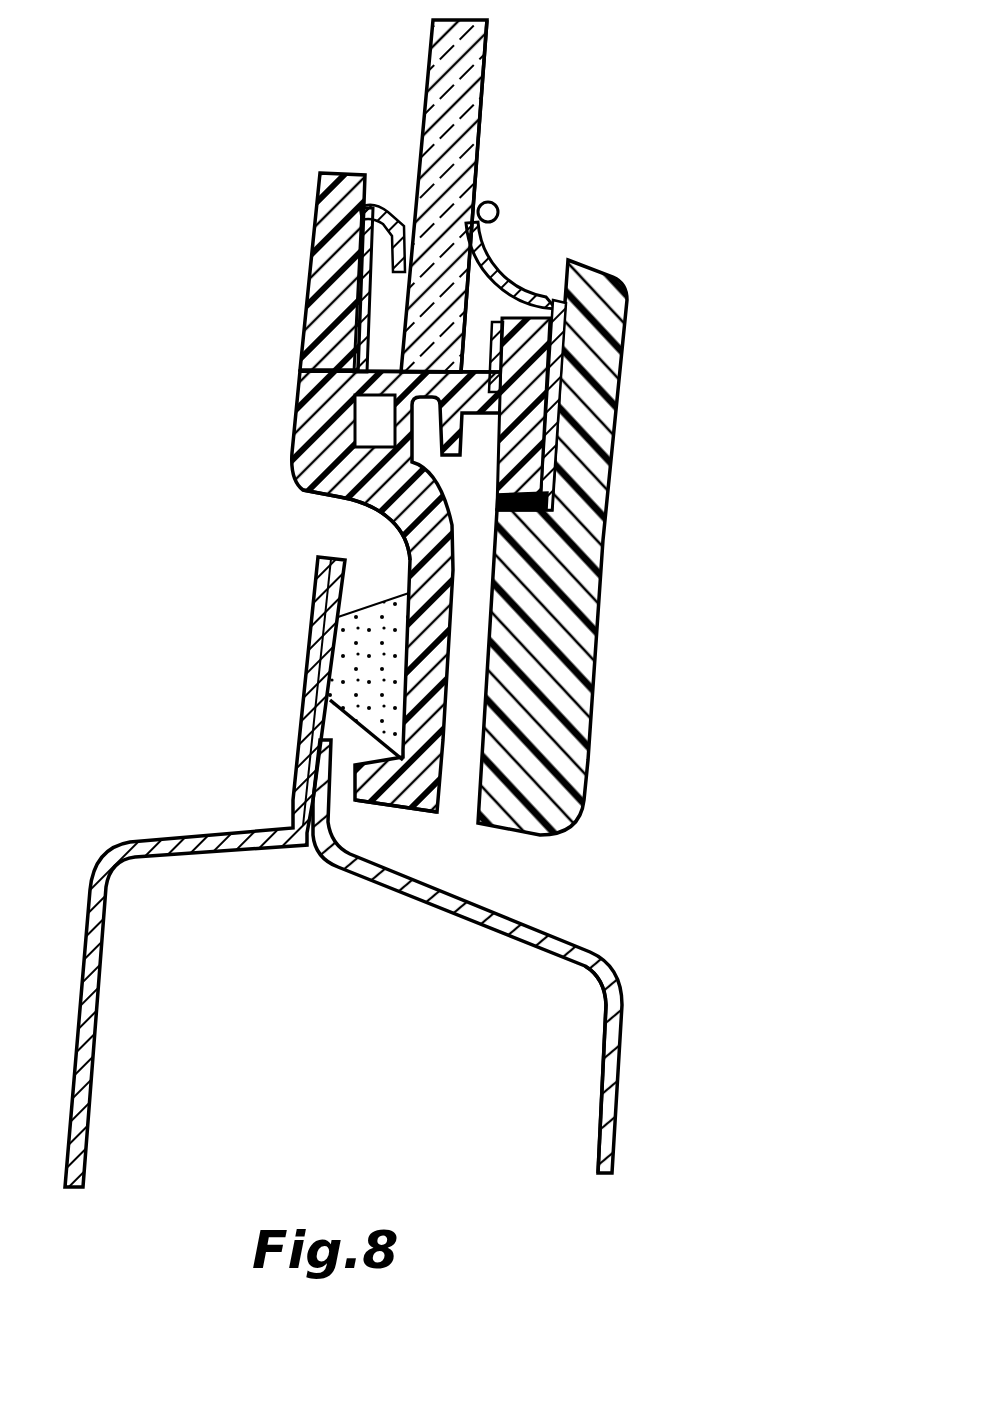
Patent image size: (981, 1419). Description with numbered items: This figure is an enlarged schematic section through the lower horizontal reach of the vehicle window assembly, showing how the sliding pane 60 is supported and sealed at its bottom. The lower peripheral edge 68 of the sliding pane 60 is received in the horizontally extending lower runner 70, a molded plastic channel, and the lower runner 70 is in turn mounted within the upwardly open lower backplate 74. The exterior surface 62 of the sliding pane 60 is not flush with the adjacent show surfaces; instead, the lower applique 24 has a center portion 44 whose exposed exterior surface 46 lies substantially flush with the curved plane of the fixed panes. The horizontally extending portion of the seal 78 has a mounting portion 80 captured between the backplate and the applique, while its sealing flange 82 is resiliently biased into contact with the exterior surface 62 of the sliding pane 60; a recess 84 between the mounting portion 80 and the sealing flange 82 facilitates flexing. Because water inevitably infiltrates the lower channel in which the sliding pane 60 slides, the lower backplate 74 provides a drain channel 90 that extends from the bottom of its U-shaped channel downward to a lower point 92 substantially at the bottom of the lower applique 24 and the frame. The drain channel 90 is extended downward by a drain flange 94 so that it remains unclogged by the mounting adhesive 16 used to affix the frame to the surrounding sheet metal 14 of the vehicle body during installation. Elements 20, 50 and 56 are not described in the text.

The sliding pane 60 is at (488, 32).
The exterior surface of sliding pane 62 is at (481, 114).
The lower backplate 74 is at (322, 212).
The lower runner 70 is at (301, 376).
The lower peripheral edge 68 is at (463, 372).
The sealing flange 82 is at (505, 240).
The recess 84 is at (541, 298).
The lower applique 24 is at (592, 544).
The seal 78 is at (566, 345).
The mounting portion 80 is at (566, 388).
The center portion 44 is at (591, 547).
The exposed exterior surface 46 is at (606, 546).
The drain channel 90 is at (458, 534).
The drain flange 94 is at (396, 606).
The sheet metal 14 is at (318, 666).
The mounting adhesive 16 is at (336, 702).
The lower point 92 is at (447, 817).
The support bracket 20 is at (503, 936).
The bend 50 is at (606, 978).
The leg 56 is at (610, 1093).